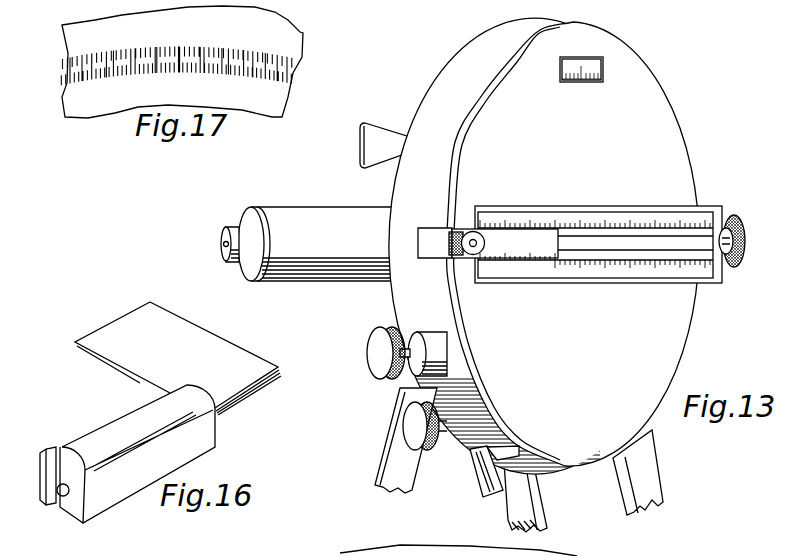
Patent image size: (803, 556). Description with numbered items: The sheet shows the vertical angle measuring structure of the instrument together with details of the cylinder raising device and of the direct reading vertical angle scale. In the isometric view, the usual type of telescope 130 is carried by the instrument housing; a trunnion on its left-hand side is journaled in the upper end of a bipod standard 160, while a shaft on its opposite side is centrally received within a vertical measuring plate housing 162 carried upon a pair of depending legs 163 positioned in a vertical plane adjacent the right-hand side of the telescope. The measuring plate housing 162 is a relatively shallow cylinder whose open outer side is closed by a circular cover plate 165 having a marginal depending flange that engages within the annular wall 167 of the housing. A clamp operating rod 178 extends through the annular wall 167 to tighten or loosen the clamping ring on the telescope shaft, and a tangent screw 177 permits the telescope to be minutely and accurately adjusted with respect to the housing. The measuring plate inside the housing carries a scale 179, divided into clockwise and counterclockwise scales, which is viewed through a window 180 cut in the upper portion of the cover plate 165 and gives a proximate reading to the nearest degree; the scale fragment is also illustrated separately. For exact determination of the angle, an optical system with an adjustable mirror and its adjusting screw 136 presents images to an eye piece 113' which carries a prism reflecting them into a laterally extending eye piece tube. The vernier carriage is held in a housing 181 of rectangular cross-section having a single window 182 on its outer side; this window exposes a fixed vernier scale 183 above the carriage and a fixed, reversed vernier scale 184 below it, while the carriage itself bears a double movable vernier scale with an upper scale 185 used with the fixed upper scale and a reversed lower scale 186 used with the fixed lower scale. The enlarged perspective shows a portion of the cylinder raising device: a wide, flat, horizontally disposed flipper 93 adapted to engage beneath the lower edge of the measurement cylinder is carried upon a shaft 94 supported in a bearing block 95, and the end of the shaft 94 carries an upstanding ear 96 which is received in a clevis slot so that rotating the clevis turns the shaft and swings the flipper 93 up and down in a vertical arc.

In FIG. 16, the flippers 93 is at (190, 333).
In FIG. 16, the shafts 94 is at (76, 489).
In FIG. 16, the bearing blocks 95 is at (120, 418).
In FIG. 16, the upstanding ears 96 is at (40, 482).
In FIG. 13, the eye piece 113' is at (430, 231).
In FIG. 13, the telescope 130 is at (332, 203).
In FIG. 13, the adjusting screw 136 is at (377, 352).
In FIG. 13, the bipod standard 160 is at (393, 463).
In FIG. 13, the measuring plate housing 162 is at (400, 293).
In FIG. 13, the depending legs 163 is at (535, 492).
In FIG. 13, the circular cover plate 165 is at (682, 327).
In FIG. 13, the annular wall 167 is at (460, 58).
In FIG. 13, the tangent screw 177 is at (417, 423).
In FIG. 13, the clamp operating rod 178 is at (374, 136).
In FIG. 17, the scale 179 is at (275, 88).
In FIG. 13, the scale 179 is at (605, 68).
In FIG. 13, the window 180 is at (604, 78).
In FIG. 13, the housing 181 is at (648, 280).
In FIG. 13, the window 182 is at (678, 222).
In FIG. 13, the fixed vernier scale 183 is at (546, 194).
In FIG. 13, the reversed vernier scale 184 is at (541, 275).
In FIG. 13, the upper scale 185 is at (489, 230).
In FIG. 13, the reversed lower scale 186 is at (508, 258).